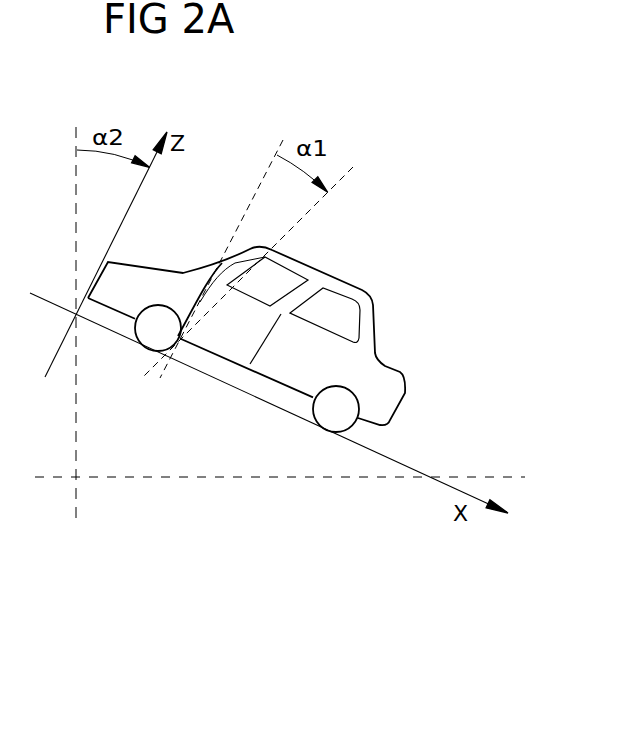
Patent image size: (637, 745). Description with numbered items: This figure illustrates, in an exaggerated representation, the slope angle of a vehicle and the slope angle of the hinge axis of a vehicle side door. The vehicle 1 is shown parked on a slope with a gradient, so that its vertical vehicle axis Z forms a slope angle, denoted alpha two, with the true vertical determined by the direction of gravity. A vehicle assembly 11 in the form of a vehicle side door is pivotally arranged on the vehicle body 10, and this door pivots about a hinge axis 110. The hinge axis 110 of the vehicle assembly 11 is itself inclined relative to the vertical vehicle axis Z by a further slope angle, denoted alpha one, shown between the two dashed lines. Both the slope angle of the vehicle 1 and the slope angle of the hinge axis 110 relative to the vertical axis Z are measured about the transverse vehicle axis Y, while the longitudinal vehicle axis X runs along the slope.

The vehicle 1 is at (281, 346).
The vehicle body 10 is at (388, 394).
The vehicle assembly 11 is at (223, 345).
The hinge axis 110 is at (313, 208).